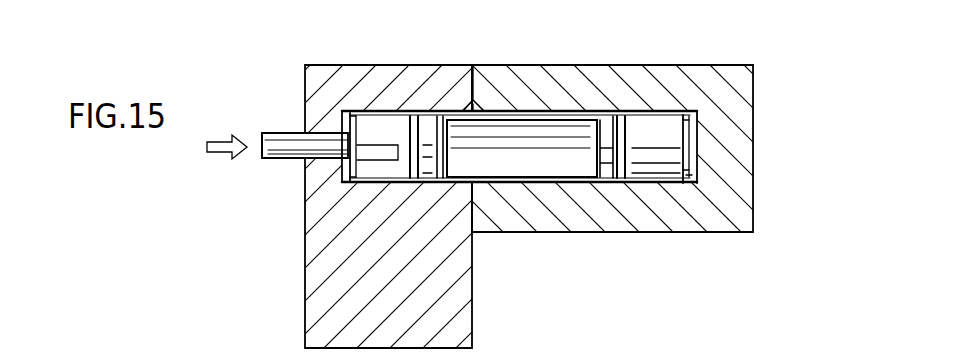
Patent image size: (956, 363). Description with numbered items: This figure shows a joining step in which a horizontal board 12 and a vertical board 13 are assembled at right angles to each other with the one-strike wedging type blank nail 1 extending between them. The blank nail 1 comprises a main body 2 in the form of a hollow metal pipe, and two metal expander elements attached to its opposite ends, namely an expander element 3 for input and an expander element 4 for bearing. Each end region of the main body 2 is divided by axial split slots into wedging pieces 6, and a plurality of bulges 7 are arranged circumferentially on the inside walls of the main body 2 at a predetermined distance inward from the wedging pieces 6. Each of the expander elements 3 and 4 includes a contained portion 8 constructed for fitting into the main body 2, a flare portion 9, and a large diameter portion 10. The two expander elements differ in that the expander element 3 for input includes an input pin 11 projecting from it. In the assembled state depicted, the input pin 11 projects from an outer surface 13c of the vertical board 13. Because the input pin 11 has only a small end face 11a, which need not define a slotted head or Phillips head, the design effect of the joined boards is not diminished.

The one-strike wedging type blank nail 1 is at (542, 98).
The main body 2 is at (537, 194).
The expander element for input 3 is at (393, 172).
The expander element for bearing 4 is at (662, 168).
The wedging pieces 6 is at (361, 181).
The bulges 7 is at (413, 117).
The contained portion 8 is at (434, 178).
The flare portion 9 is at (357, 168).
The large diameter portion 10 is at (339, 118).
The input pin 11 is at (292, 160).
The end face 11a is at (258, 136).
The horizontal board 12 is at (630, 66).
The vertical board 13 is at (388, 64).
The outer surface 13c is at (307, 86).